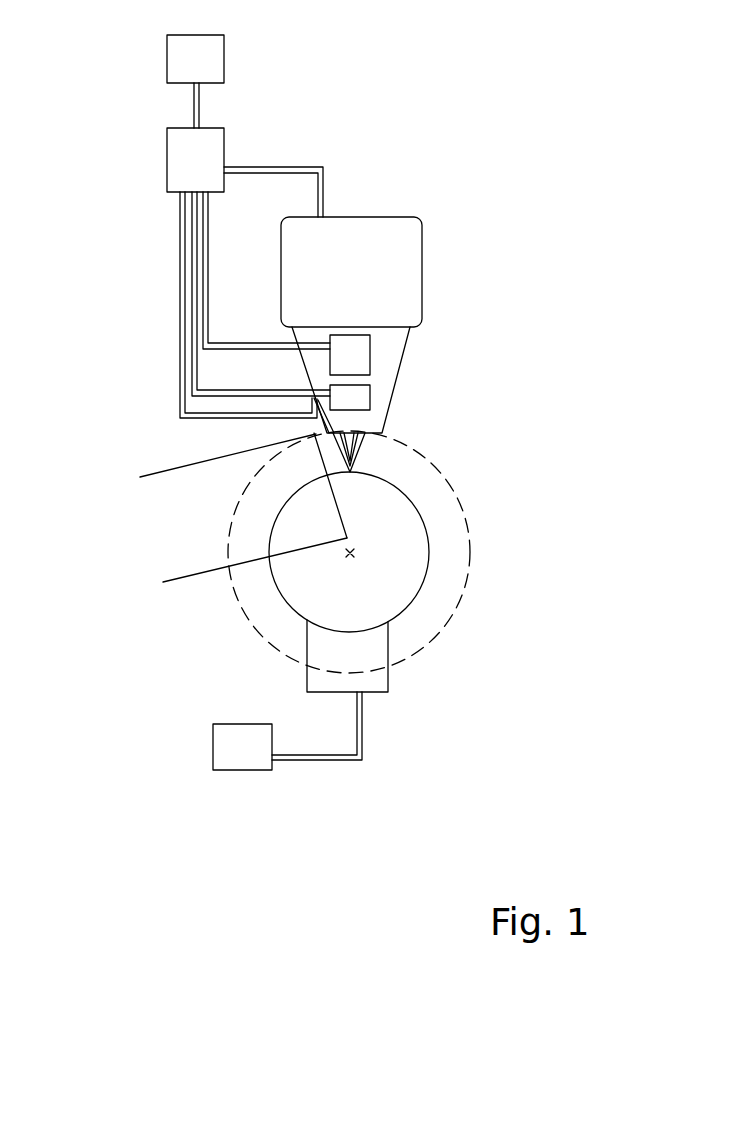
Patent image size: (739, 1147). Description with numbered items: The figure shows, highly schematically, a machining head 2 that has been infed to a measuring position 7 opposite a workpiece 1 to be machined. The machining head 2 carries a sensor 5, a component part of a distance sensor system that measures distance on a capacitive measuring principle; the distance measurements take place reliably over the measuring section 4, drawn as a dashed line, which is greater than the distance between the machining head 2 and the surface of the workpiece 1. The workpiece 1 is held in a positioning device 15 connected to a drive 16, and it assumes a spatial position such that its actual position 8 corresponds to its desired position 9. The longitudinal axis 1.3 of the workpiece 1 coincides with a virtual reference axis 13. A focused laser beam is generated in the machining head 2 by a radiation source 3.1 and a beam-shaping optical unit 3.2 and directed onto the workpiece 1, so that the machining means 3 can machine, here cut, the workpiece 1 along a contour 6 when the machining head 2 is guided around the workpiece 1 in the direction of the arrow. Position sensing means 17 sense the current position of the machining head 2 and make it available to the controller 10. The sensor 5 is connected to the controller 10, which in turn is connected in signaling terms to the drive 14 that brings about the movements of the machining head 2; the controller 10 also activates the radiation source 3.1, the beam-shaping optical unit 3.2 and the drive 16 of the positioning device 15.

The workpiece 1 is at (410, 563).
The longitudinal axis 1.3 is at (355, 553).
The machining head 2 is at (388, 380).
The machining means 3 is at (363, 444).
The radiation source 3.1 is at (365, 358).
The beam-shaping optical unit 3.2 is at (362, 397).
The measuring section 4 is at (145, 478).
The sensor 5 is at (313, 403).
The contour 6 is at (272, 588).
The measuring position 7 is at (310, 432).
The actual position 8 is at (462, 460).
The desired position 9 is at (354, 473).
The controller 10 is at (208, 145).
The virtual reference axis 13 is at (471, 628).
The drive 14 is at (385, 247).
The positioning device 15 is at (365, 678).
The drive 16 is at (242, 757).
The position sensing means 17 is at (208, 63).